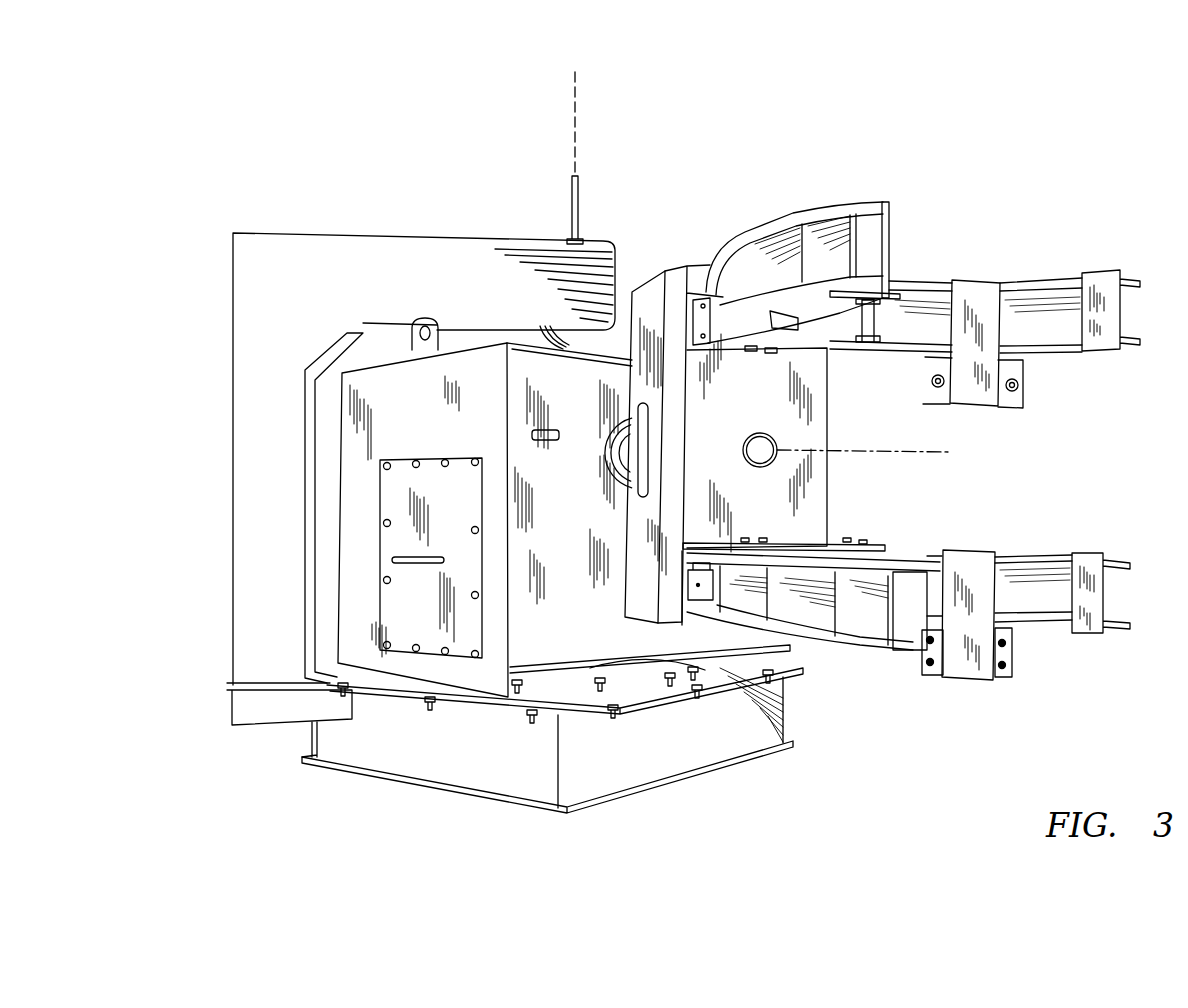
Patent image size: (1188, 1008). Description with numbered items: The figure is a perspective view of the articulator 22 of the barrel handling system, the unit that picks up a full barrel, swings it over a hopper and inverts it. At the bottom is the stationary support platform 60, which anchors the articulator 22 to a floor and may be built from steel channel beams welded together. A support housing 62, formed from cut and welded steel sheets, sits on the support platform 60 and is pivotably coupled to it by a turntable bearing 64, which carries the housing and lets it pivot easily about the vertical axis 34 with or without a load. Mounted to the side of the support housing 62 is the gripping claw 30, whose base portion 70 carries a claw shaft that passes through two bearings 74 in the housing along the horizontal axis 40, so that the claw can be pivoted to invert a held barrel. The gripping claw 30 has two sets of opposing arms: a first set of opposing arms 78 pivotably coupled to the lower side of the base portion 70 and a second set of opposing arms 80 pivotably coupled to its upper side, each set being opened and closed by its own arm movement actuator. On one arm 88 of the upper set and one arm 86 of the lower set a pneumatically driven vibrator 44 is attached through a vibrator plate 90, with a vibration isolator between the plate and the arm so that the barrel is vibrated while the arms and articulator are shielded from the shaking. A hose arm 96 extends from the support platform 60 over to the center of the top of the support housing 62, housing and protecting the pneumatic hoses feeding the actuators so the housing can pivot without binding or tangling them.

The articulator 22 is at (771, 145).
The gripping claw 30 is at (958, 238).
The vertical axis 34 is at (578, 96).
The horizontal axis 40 is at (847, 452).
The vibrator 44 is at (1017, 367).
The support platform 60 is at (648, 768).
The support housing 62 is at (574, 569).
The turntable bearing 64 is at (642, 675).
The base portion 70 is at (722, 455).
The bearing 74 is at (610, 452).
The first set of opposing arms 78 is at (912, 550).
The second set of opposing arms 80 is at (851, 201).
The arm 86 is at (1097, 615).
The arm 88 is at (1112, 322).
The vibrator plate 90 is at (983, 398).
The hose arm 96 is at (375, 248).